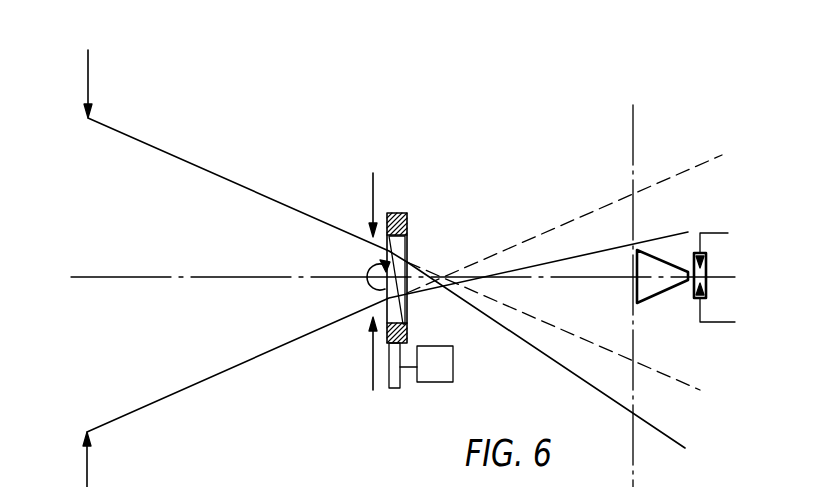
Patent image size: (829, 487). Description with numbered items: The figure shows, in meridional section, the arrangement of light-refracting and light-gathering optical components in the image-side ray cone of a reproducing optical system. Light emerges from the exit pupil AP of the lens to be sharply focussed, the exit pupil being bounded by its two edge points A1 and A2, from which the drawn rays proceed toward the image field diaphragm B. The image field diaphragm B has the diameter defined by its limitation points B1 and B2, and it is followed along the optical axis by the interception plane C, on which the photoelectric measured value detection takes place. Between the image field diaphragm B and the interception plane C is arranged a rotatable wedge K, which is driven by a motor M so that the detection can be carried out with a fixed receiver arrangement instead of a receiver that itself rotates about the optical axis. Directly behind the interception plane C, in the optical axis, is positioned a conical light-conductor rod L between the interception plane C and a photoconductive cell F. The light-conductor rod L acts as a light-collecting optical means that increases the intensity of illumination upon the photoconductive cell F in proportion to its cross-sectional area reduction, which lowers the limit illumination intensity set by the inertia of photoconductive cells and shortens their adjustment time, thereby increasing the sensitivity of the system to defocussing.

The exit pupil AP is at (107, 82).
The exit pupil edge point A2 is at (386, 269).
The exit pupil edge point A1 is at (385, 359).
The image field diaphragm B is at (387, 201).
The image field limitation point B2 is at (351, 219).
The image field limitation point B1 is at (352, 339).
The rotatable wedge K is at (395, 306).
The motor M is at (421, 365).
The interception plane C is at (635, 275).
The light-conductor rod L is at (641, 265).
The photoconductive cell F is at (702, 274).